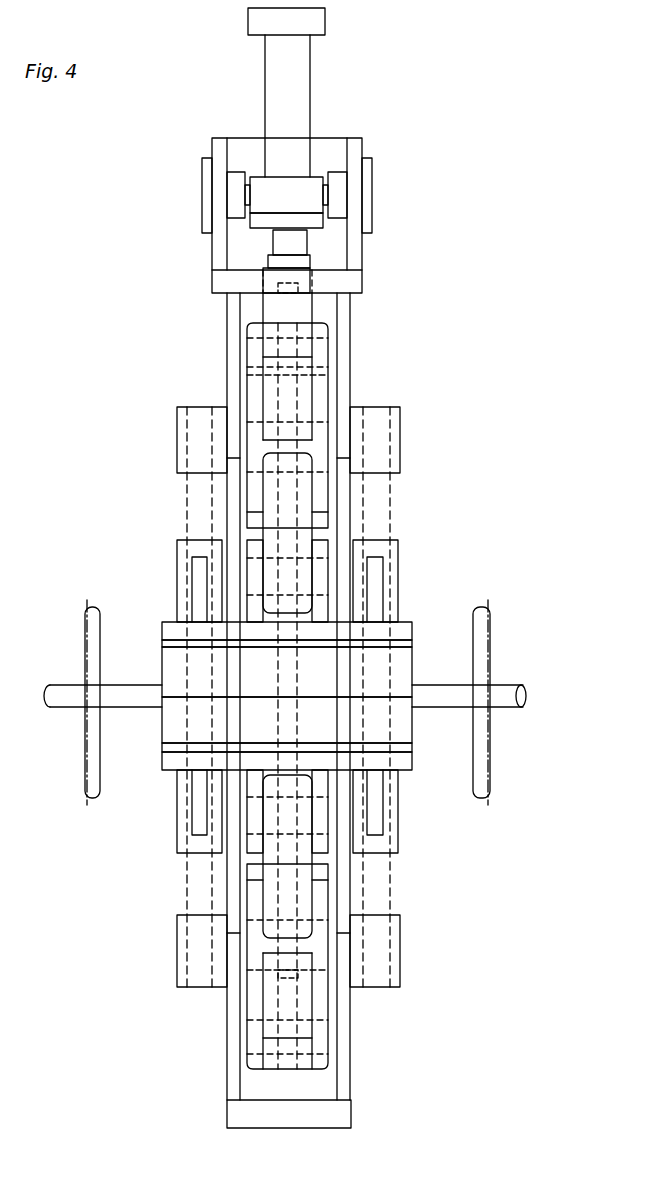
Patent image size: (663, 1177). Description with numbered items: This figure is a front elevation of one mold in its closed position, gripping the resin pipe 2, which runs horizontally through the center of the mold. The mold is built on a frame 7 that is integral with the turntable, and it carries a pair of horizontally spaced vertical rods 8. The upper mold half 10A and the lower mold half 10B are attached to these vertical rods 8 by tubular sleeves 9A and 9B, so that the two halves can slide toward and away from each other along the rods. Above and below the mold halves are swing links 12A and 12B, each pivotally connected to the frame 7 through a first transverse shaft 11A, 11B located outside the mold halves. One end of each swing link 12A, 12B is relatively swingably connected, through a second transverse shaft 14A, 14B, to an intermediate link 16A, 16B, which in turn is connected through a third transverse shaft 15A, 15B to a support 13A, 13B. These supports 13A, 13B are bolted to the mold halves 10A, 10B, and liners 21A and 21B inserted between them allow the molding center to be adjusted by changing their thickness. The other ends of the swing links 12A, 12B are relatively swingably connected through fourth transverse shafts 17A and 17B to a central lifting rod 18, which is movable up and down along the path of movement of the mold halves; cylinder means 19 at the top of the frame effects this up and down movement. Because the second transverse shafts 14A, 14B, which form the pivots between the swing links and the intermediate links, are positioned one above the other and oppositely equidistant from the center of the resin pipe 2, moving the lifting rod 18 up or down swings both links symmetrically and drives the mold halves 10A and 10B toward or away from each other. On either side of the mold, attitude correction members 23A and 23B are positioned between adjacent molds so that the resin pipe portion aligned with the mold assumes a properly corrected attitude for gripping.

The resin pipe 2 is at (68, 702).
The frame 7 is at (350, 358).
The vertical rods 8 is at (197, 508).
The tubular sleeve 9A is at (180, 557).
The tubular sleeve 9B is at (180, 822).
The upper mold half 10A is at (400, 670).
The lower mold half 10B is at (400, 725).
The first transverse shaft 11A is at (325, 378).
The first transverse shaft 11B is at (290, 1020).
The swing link 12A is at (250, 400).
The swing link 12B is at (322, 1005).
The support 13A is at (170, 632).
The support 13B is at (168, 762).
The second transverse shaft 14A is at (320, 487).
The second transverse shaft 14B is at (320, 882).
The third transverse shaft 15A is at (317, 558).
The third transverse shaft 15B is at (320, 800).
The intermediate link 16A is at (273, 500).
The intermediate link 16B is at (273, 867).
The fourth transverse shaft 17A is at (320, 338).
The fourth transverse shaft 17B is at (320, 975).
The lifting rod 18 is at (290, 585).
The cylinder means 19 is at (298, 85).
The liner 21A is at (413, 637).
The liner 21B is at (413, 752).
The attitude correction member 23A is at (480, 640).
The attitude correction member 23B is at (92, 770).